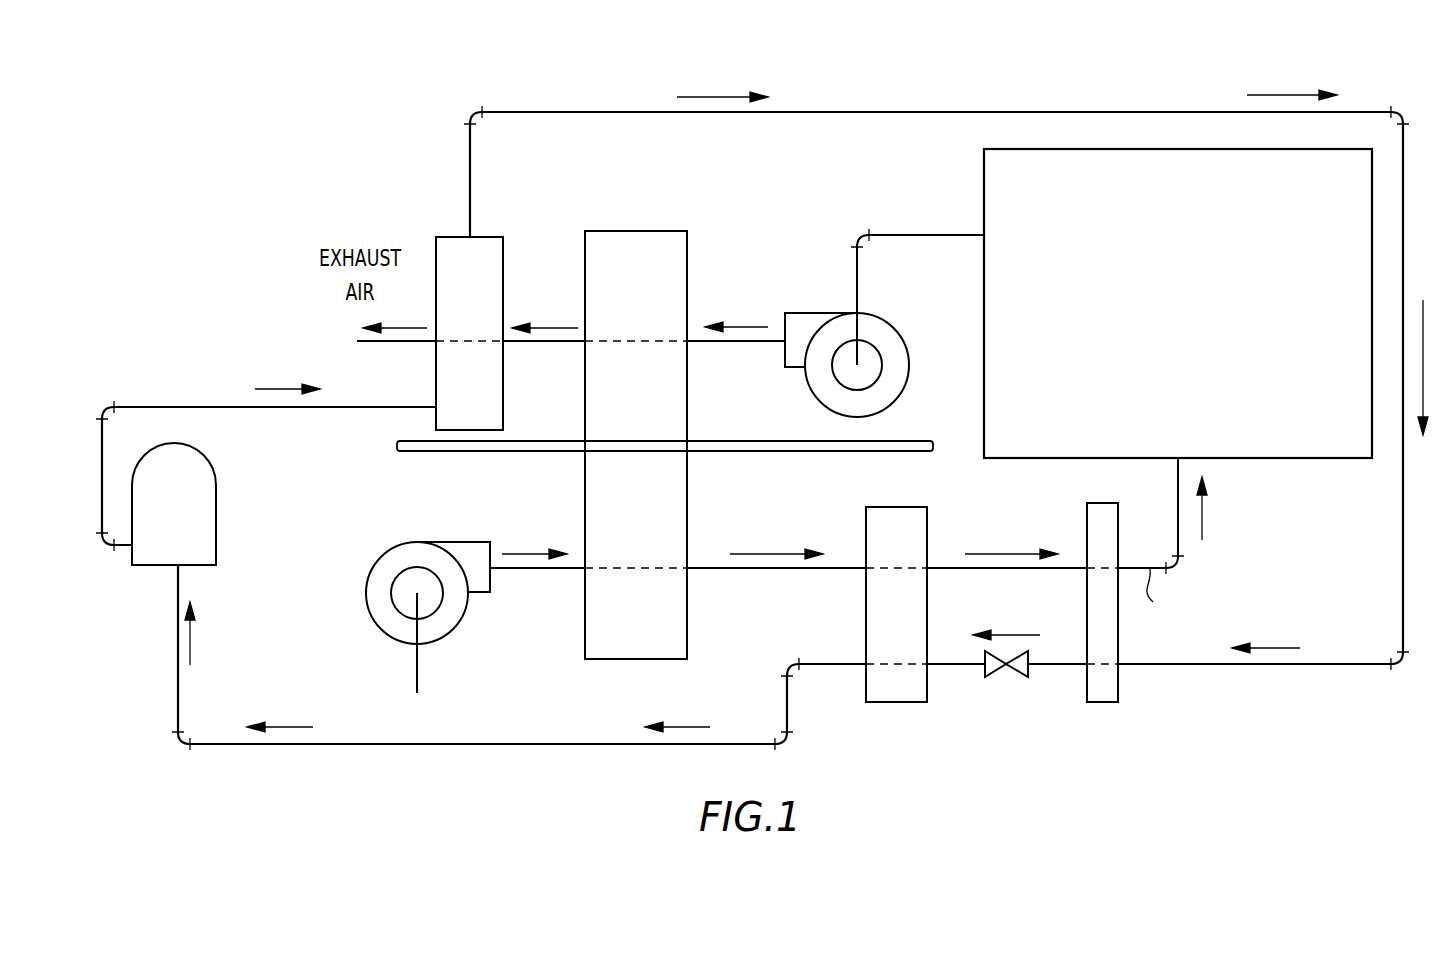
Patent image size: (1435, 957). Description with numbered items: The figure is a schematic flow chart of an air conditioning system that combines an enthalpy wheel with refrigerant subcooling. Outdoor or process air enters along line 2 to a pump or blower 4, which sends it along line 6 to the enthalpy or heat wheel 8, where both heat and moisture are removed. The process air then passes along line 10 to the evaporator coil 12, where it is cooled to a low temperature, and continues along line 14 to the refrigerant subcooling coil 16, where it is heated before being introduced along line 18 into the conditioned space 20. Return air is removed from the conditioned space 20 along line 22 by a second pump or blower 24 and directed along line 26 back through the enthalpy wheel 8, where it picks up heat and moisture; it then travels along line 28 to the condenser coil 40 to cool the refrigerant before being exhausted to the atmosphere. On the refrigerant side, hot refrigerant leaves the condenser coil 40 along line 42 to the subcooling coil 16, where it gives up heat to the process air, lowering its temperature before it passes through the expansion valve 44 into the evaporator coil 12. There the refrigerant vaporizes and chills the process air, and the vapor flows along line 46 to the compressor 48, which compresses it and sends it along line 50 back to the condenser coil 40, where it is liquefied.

The line 2 is at (417, 666).
The pump or blower 4 is at (438, 622).
The line 6 is at (525, 570).
The enthalpy or heat wheel 8 is at (687, 635).
The line 10 is at (795, 569).
The evaporator coil 12 is at (927, 518).
The line 14 is at (987, 568).
The refrigerant subcooling coil 16 is at (1087, 520).
The line 18 is at (1140, 565).
The conditioned space 20 is at (1293, 458).
The line 22 is at (942, 237).
The pump or blower 24 is at (900, 360).
The line 26 is at (742, 343).
The line 28 is at (568, 343).
The condenser coil 40 is at (503, 262).
The line 42 is at (820, 111).
The expansion valve 44 is at (1028, 652).
The line 46 is at (543, 744).
The compressor 48 is at (216, 545).
The line 50 is at (196, 407).